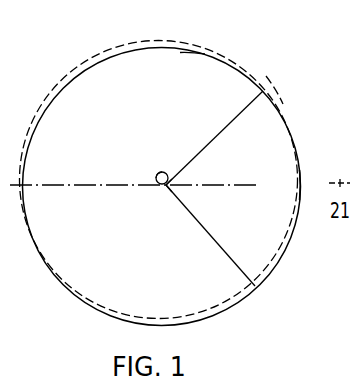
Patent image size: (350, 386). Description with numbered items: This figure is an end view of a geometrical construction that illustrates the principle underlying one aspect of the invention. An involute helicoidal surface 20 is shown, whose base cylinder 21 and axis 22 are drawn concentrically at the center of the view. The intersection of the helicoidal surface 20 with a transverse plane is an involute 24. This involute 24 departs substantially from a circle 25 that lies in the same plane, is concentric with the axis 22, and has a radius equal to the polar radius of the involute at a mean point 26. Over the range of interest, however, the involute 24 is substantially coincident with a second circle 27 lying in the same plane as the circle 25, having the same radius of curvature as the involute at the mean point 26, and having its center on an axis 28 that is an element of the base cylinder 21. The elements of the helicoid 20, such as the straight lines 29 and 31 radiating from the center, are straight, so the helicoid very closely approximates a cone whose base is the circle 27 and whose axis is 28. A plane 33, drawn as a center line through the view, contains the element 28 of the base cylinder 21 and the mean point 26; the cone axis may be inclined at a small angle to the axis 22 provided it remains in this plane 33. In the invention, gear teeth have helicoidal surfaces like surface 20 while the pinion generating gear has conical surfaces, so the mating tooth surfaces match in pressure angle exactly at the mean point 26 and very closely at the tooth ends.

The involute helicoidal surface 20 is at (260, 246).
The base cylinder 21 is at (164, 172).
The axis 22 is at (156, 176).
The involute 24 is at (277, 98).
The circle 25 is at (222, 54).
The mean point 26 is at (303, 185).
The circle 27 is at (192, 51).
The axis 28 is at (167, 187).
The element of helicoid 29 is at (231, 124).
The element of helicoid 31 is at (215, 242).
The plane 33 is at (84, 187).